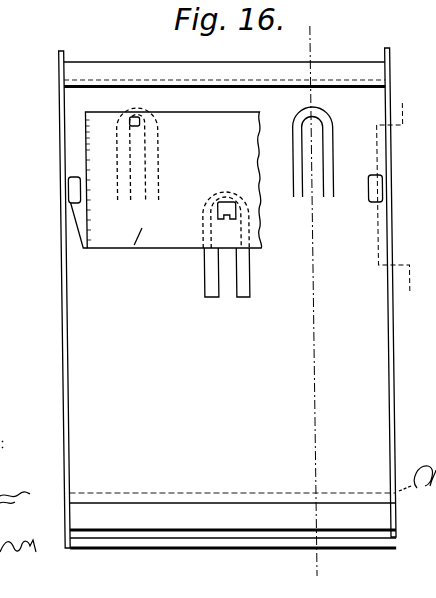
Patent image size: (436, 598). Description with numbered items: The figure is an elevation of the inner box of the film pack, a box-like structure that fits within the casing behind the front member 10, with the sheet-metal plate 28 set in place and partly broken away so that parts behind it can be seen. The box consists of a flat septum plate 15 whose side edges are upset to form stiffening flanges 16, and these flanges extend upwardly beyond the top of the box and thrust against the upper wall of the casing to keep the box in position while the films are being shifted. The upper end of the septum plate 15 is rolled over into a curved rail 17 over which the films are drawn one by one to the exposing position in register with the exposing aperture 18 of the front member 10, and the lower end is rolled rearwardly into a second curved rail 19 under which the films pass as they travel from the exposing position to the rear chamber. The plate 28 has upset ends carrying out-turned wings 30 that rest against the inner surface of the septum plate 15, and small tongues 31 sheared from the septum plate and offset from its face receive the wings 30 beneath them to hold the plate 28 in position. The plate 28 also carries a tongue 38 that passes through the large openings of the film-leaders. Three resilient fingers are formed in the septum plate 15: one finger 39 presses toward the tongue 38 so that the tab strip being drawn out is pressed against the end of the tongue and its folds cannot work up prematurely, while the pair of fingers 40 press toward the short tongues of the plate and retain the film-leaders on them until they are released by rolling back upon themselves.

The front member 10 is at (392, 220).
The septum plate 15 is at (334, 39).
The stiffening flanges 16 is at (61, 277).
The curved rail 17 is at (118, 73).
The exposing aperture 18 is at (424, 99).
The second curved rail 19 is at (232, 535).
The plate 28 is at (173, 200).
The out-turned wings 30 is at (78, 212).
The tongues 31 is at (68, 190).
The tongue 38 is at (216, 218).
The resilient finger 39 is at (225, 272).
The resilient fingers 40 is at (147, 121).